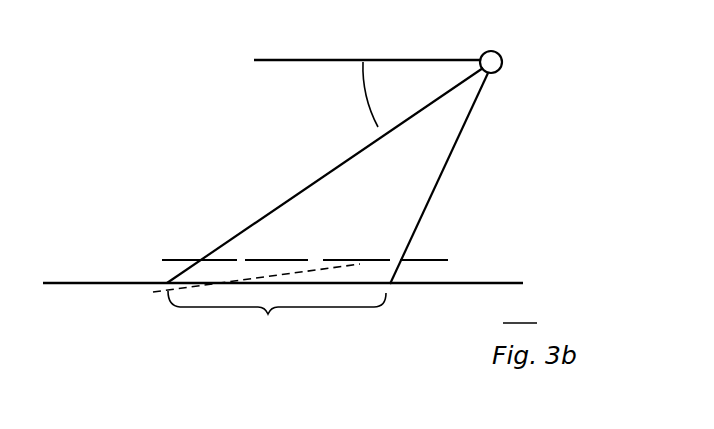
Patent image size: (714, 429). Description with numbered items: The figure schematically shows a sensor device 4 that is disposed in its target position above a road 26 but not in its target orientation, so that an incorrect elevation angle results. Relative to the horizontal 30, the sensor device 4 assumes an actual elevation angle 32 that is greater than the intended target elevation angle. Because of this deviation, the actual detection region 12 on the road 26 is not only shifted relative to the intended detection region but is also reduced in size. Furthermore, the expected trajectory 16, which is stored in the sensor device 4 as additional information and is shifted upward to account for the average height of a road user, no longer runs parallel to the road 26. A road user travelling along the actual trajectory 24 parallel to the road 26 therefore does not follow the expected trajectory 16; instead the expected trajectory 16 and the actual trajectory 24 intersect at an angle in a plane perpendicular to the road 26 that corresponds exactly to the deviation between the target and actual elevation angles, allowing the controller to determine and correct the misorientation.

The horizontal 30 is at (268, 58).
The actual elevation angle 32 is at (367, 83).
The sensor device 4 is at (494, 60).
The actual trajectory 24 is at (178, 260).
The expected trajectory 16 is at (357, 262).
The road 26 is at (480, 283).
The actual detection region 12 is at (277, 320).